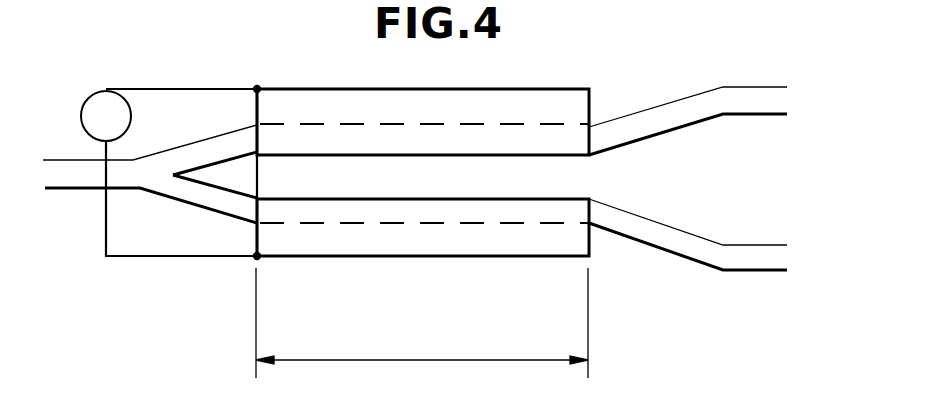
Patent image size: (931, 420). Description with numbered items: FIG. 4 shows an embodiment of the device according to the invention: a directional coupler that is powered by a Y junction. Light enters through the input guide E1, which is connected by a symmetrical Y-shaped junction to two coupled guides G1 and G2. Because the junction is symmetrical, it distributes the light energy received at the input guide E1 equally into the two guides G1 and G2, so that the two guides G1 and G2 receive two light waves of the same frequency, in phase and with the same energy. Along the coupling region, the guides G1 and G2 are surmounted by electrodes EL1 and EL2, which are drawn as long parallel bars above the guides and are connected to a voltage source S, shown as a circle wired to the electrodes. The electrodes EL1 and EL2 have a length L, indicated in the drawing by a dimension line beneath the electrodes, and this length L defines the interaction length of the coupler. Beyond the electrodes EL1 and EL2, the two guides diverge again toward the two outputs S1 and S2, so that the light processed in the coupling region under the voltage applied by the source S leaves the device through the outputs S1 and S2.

The voltage source S is at (89, 110).
The input guide E1 is at (77, 178).
The first coupled guide G1 is at (197, 153).
The second coupled guide G2 is at (182, 192).
The first electrode EL1 is at (468, 105).
The second electrode EL2 is at (418, 243).
The first output S1 is at (745, 95).
The second output S2 is at (688, 256).
The length of the electrodes L is at (422, 323).